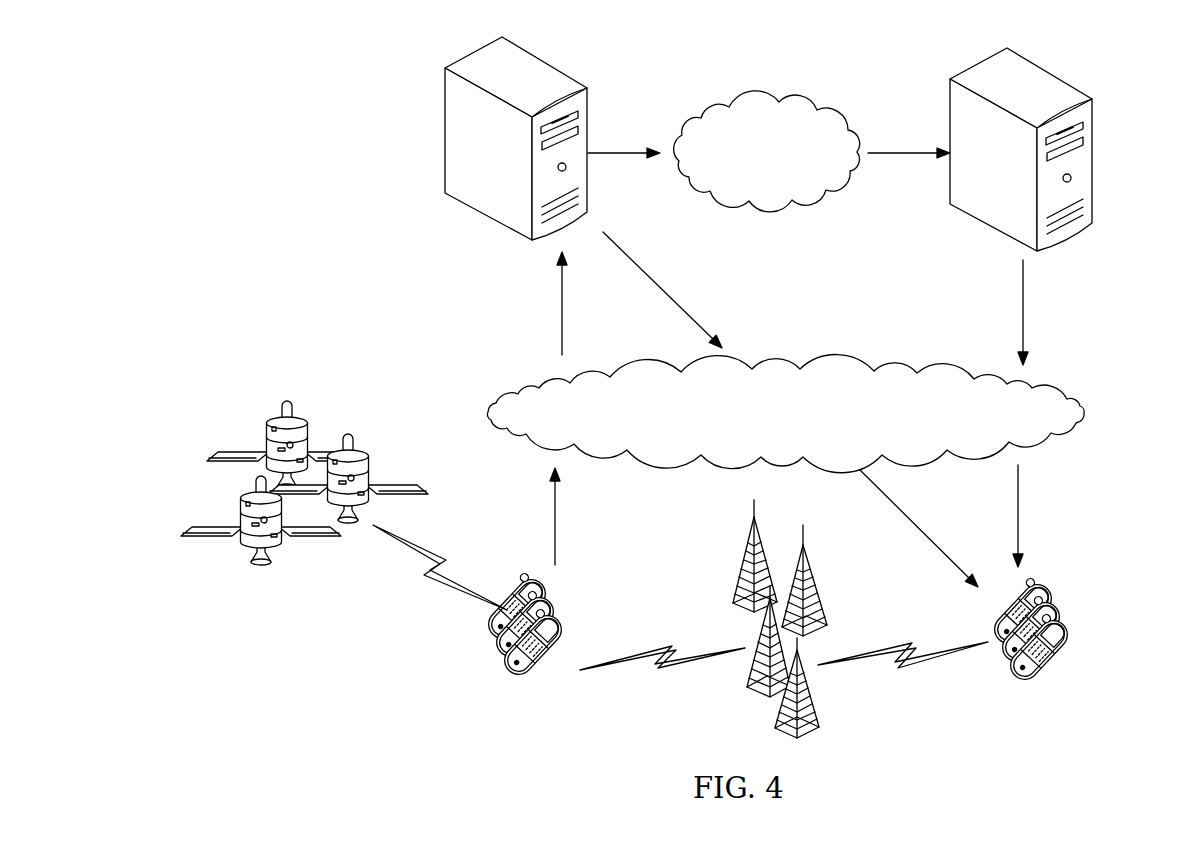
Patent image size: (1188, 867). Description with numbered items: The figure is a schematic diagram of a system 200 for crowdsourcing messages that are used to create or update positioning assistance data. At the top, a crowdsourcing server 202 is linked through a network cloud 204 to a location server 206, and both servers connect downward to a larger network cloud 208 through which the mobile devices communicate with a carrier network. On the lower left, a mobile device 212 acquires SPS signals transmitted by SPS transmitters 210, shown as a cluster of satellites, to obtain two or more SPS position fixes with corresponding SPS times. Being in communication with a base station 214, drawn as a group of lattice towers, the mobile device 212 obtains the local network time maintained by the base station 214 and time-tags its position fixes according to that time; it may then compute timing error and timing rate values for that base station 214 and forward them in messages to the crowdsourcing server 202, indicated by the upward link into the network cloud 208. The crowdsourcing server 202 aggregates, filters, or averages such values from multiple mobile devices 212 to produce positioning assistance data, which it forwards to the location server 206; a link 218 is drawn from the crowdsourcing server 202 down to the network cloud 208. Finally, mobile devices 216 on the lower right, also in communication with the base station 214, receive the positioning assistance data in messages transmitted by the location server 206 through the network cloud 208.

The system 200 is at (271, 98).
The crowdsourcing server 202 is at (589, 93).
The network cloud 204 is at (775, 99).
The location server 206 is at (1093, 122).
The network cloud 208 is at (905, 367).
The SPS transmitters 210 is at (306, 422).
The mobile device 212 is at (571, 607).
The base station 214 is at (810, 572).
The mobile devices 216 is at (1075, 603).
The communication link arrow 218 is at (662, 292).